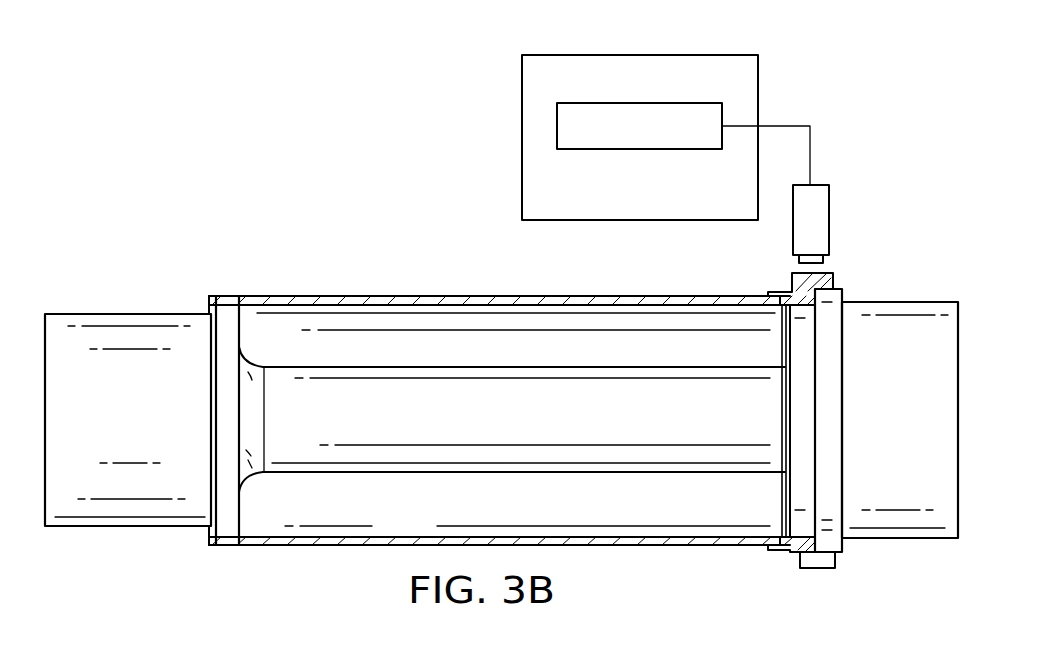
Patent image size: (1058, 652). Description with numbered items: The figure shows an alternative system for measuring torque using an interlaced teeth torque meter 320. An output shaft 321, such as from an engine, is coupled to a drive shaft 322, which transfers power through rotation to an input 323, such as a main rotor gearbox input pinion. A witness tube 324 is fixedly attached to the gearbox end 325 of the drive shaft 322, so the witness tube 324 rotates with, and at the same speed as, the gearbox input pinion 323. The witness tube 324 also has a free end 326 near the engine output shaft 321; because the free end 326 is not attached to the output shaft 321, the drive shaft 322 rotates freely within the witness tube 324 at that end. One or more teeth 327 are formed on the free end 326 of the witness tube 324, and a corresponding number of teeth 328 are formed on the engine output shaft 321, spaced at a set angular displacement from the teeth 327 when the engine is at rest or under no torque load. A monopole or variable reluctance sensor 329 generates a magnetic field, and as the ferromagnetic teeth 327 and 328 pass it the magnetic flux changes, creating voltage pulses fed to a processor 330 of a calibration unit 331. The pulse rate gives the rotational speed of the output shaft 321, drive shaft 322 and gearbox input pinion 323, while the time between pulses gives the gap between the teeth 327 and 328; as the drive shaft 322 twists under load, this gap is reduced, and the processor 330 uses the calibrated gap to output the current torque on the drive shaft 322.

The interlaced teeth torque meter 320 is at (298, 185).
The output shaft 321 is at (898, 538).
The drive shaft 322 is at (415, 474).
The input 323 is at (127, 314).
The witness tube 324 is at (355, 297).
The gearbox end 325 is at (222, 552).
The free end 326 is at (760, 566).
The teeth 327 is at (792, 285).
The teeth 328 is at (836, 284).
The monopole or variable reluctance sensor 329 is at (829, 208).
The processor 330 is at (640, 151).
The calibration unit 331 is at (640, 55).